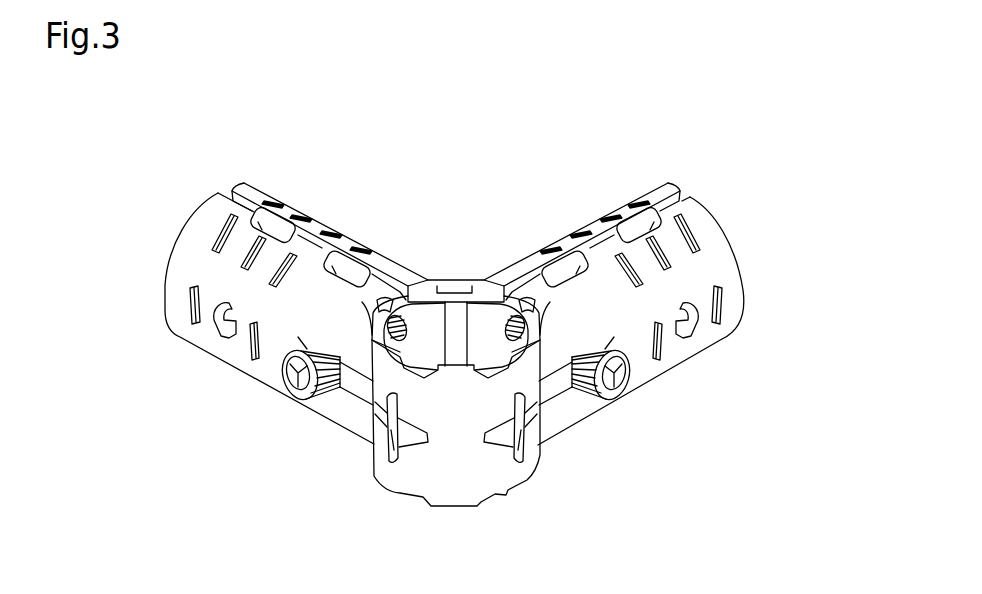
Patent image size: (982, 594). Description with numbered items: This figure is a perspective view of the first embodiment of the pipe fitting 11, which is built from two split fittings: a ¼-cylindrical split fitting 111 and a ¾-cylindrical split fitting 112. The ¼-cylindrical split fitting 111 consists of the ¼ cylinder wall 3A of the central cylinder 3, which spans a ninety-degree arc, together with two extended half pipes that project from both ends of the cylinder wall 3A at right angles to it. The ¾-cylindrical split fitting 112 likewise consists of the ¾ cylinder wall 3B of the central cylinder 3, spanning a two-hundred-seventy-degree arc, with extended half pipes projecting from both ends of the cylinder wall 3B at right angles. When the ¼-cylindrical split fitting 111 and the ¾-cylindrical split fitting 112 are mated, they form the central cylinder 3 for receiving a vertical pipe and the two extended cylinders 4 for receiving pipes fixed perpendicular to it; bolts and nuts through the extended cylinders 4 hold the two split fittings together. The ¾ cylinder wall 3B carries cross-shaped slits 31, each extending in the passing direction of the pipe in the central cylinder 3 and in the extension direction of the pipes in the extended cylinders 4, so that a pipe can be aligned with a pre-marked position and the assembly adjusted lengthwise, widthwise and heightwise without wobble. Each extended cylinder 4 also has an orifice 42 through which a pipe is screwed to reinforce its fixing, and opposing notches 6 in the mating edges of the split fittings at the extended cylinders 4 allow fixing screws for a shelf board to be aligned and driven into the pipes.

The central cylinder 3 is at (454, 490).
The ¼ cylinder wall 3A is at (452, 300).
The ¾ cylinder wall 3B is at (540, 390).
The cross-shaped slit 31 is at (390, 452).
The extended cylinder 4 is at (755, 332).
The orifice 42 is at (687, 332).
The notch 6 is at (553, 265).
The pipe fitting 11 is at (200, 126).
The ¼-cylindrical split fitting 111 is at (662, 173).
The ¾-cylindrical split fitting 112 is at (732, 215).